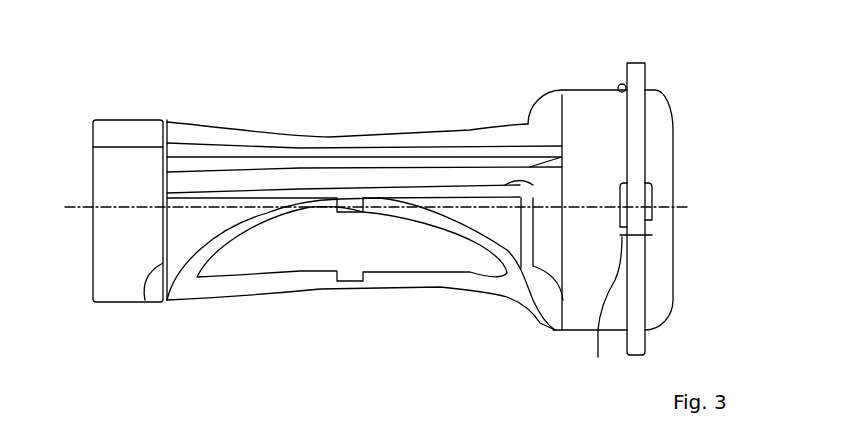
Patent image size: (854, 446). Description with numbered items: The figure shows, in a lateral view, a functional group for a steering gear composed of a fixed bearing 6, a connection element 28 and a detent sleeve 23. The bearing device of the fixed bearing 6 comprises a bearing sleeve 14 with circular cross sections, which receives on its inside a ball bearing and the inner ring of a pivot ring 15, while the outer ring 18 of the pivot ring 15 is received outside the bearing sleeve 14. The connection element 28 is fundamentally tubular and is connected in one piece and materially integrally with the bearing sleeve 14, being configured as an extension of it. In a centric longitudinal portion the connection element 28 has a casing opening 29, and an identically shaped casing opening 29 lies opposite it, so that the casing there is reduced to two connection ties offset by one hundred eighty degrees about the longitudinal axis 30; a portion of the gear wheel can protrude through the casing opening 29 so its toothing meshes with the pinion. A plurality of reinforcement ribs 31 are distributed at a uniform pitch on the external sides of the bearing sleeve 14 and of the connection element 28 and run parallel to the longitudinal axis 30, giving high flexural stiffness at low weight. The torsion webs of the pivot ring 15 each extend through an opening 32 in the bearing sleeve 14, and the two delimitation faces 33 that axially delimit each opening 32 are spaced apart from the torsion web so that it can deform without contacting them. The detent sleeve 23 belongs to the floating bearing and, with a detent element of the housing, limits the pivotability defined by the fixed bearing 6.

The fixed bearing 6 is at (582, 59).
The bearing sleeve 14 is at (598, 100).
The pivot ring 15 is at (640, 57).
The outer ring 18 is at (640, 88).
The detent sleeve 23 is at (130, 135).
The connection element 28 is at (441, 140).
The casing opening 29 is at (361, 117).
The longitudinal axis 30 is at (698, 200).
The reinforcement ribs 31 is at (260, 172).
The opening 32 is at (602, 314).
The delimitation faces 33 is at (659, 217).